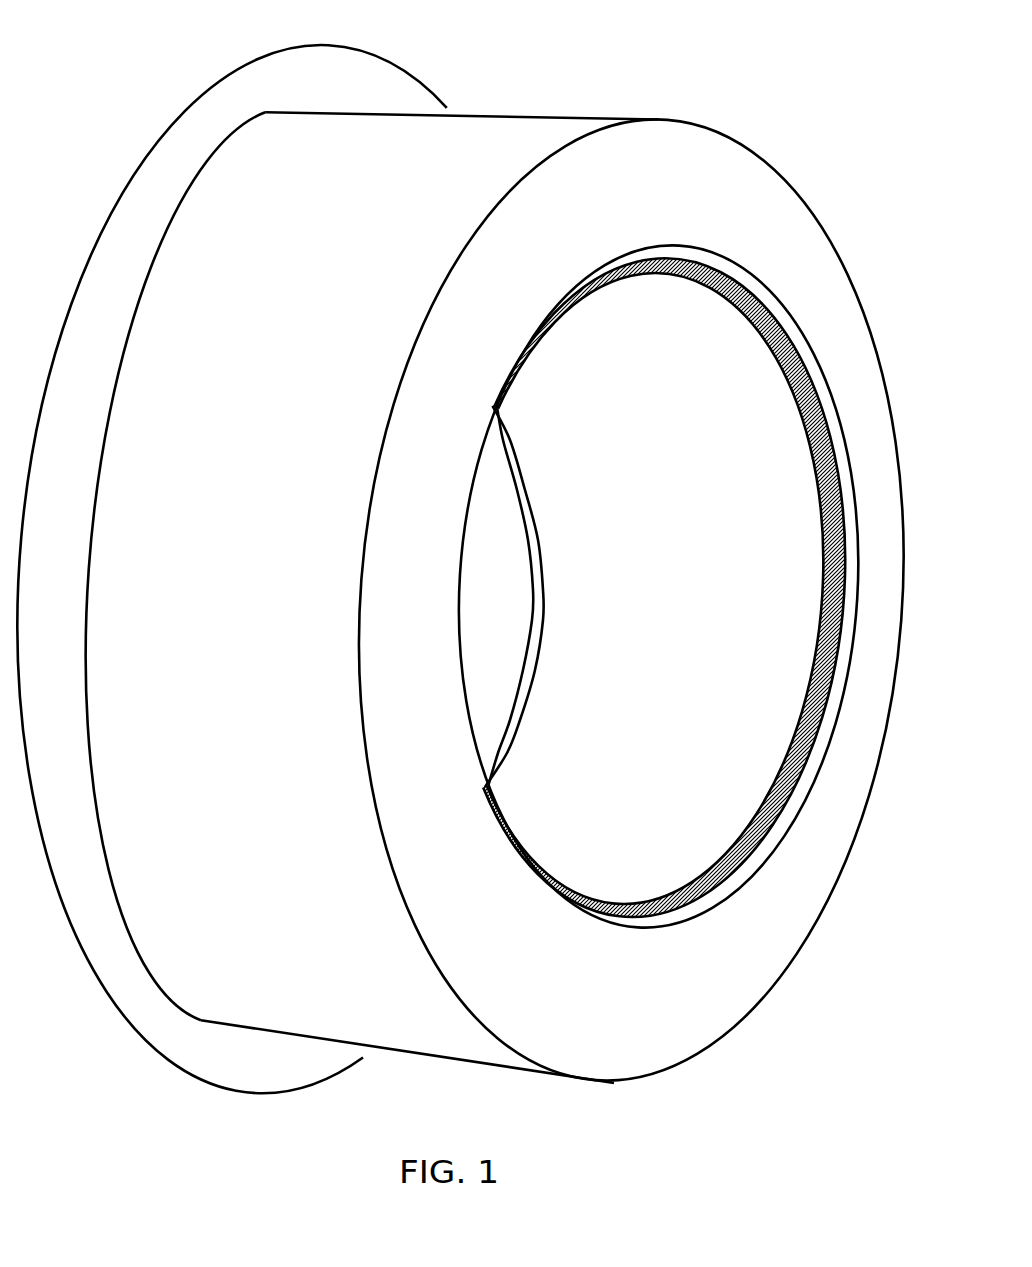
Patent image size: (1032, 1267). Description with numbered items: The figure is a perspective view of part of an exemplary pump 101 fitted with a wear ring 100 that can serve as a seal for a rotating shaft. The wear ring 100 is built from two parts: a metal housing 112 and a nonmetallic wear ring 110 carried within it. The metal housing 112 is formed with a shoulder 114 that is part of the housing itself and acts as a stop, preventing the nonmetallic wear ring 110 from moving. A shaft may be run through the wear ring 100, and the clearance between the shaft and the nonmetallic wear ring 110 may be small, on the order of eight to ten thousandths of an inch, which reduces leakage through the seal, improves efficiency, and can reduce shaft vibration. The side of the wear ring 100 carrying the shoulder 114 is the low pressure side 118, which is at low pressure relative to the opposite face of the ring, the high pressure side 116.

The wear ring 100 is at (820, 430).
The pump 101 is at (614, 86).
The nonmetallic wear ring 110 is at (660, 680).
The metal housing 112 is at (617, 167).
The shoulder 114 is at (737, 287).
The high pressure side 116 is at (523, 670).
The low pressure side 118 is at (753, 847).